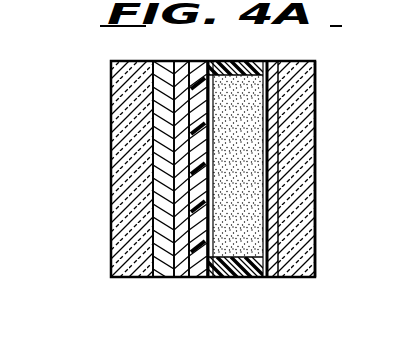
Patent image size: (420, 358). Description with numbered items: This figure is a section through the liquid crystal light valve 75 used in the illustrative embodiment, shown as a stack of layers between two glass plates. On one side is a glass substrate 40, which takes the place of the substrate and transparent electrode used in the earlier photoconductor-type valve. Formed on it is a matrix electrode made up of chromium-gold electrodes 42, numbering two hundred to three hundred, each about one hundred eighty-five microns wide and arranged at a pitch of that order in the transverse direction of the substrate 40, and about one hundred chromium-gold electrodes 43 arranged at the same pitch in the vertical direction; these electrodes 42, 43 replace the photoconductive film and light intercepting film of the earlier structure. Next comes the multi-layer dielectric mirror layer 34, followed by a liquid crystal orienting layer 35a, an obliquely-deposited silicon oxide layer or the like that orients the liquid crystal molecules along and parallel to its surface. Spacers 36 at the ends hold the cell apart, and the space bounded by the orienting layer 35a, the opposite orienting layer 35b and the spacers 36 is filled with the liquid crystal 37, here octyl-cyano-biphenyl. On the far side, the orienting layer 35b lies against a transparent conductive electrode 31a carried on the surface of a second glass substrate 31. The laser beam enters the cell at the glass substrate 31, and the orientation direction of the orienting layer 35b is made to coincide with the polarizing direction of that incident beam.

The liquid crystal light valve 75 is at (68, 138).
The glass substrate 40 is at (120, 197).
The chromium-gold electrodes 42 is at (163, 278).
The chromium-gold electrodes 43 is at (177, 278).
The multi-layer dielectric mirror layer 34 is at (195, 278).
The liquid crystal orienting layer 35a is at (206, 278).
The liquid crystal orienting layer 35b is at (265, 278).
The spacers 36 is at (256, 61).
The liquid crystal 37 is at (248, 192).
The transparent conductive electrode 31a is at (276, 96).
The glass substrate 31 is at (316, 148).